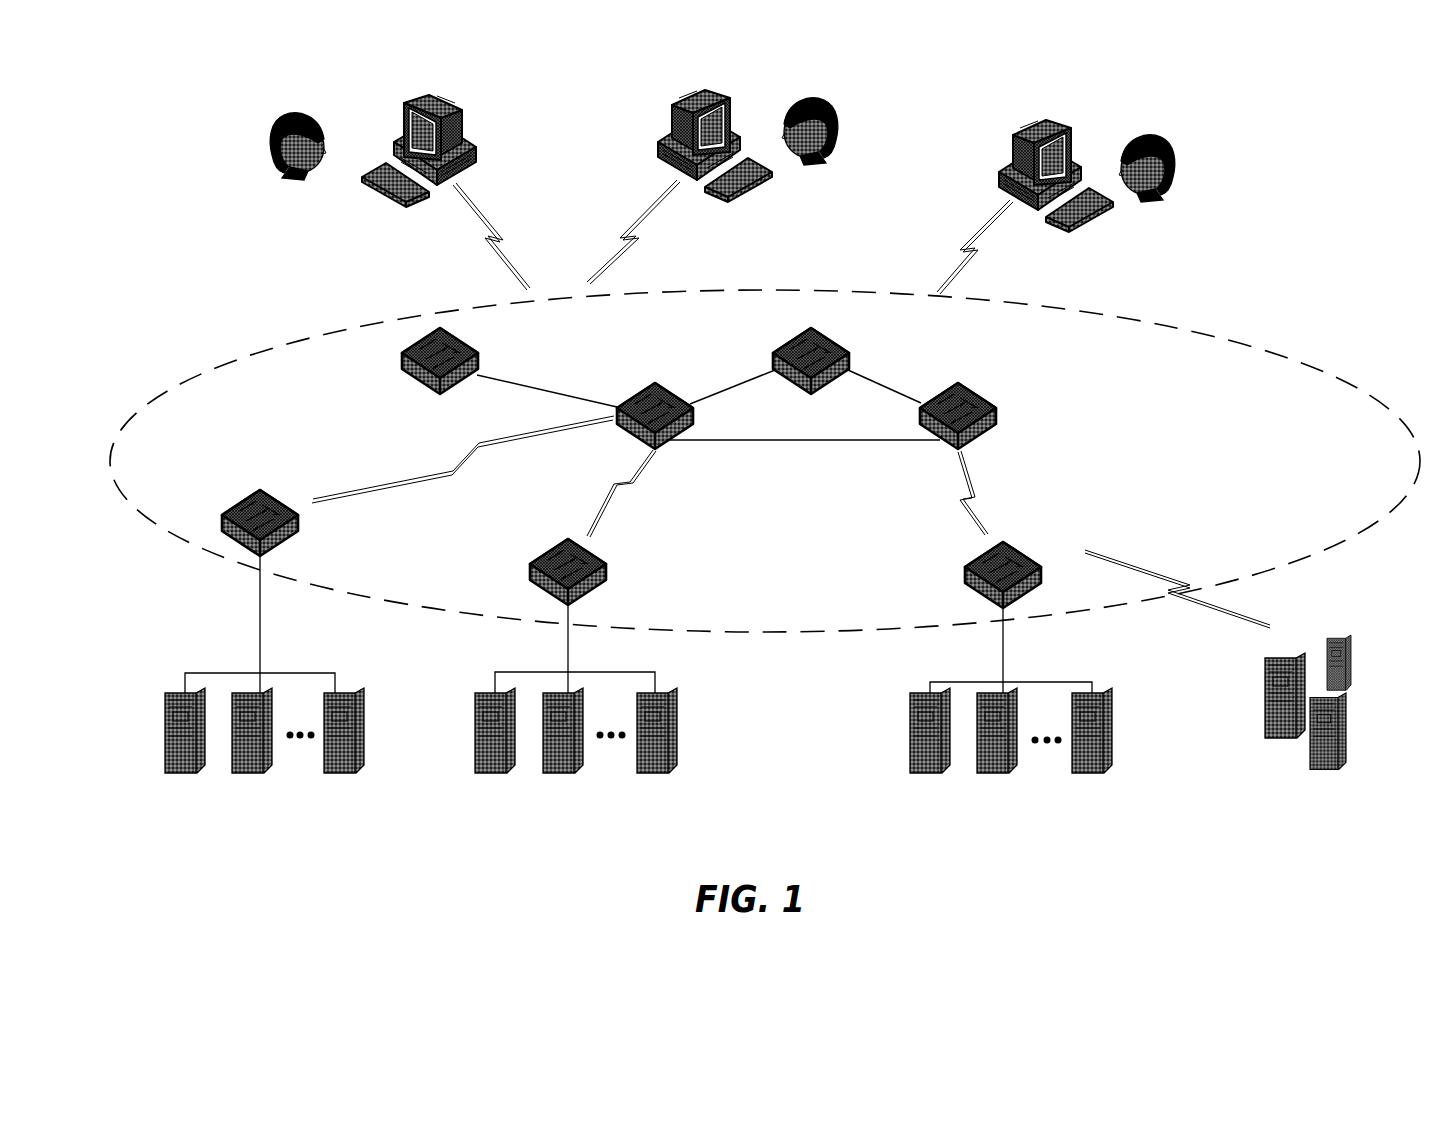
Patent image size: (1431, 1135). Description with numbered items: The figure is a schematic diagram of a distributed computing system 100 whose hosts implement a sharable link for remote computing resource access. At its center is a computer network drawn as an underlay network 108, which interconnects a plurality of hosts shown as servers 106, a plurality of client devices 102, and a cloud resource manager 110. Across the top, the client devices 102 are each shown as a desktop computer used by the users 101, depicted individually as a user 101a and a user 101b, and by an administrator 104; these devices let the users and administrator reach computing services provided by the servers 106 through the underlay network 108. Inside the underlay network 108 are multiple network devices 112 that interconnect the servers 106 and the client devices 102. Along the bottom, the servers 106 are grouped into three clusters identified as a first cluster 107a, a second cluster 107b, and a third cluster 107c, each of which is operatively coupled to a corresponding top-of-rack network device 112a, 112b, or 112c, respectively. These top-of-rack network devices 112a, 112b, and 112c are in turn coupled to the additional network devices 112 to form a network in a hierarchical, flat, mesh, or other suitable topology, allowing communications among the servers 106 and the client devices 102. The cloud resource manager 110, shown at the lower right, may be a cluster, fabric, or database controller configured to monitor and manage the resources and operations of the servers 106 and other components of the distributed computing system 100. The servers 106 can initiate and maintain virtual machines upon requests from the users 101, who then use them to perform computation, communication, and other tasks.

The distributed computing system 100 is at (1312, 160).
The users 101 is at (118, 100).
The user 101a is at (1190, 140).
The user 101b is at (852, 103).
The client devices 102 is at (452, 104).
The administrator 104 is at (248, 97).
The servers 106 is at (170, 698).
The first cluster 107a is at (118, 637).
The second cluster 107b is at (472, 656).
The third cluster 107c is at (1062, 645).
The underlay network 108 is at (840, 600).
The cloud resource manager 110 is at (1348, 640).
The network devices 112 is at (405, 341).
The top-of-rack network device 112a is at (242, 498).
The top-of-rack network device 112b is at (560, 546).
The top-of-rack network device 112c is at (1028, 548).